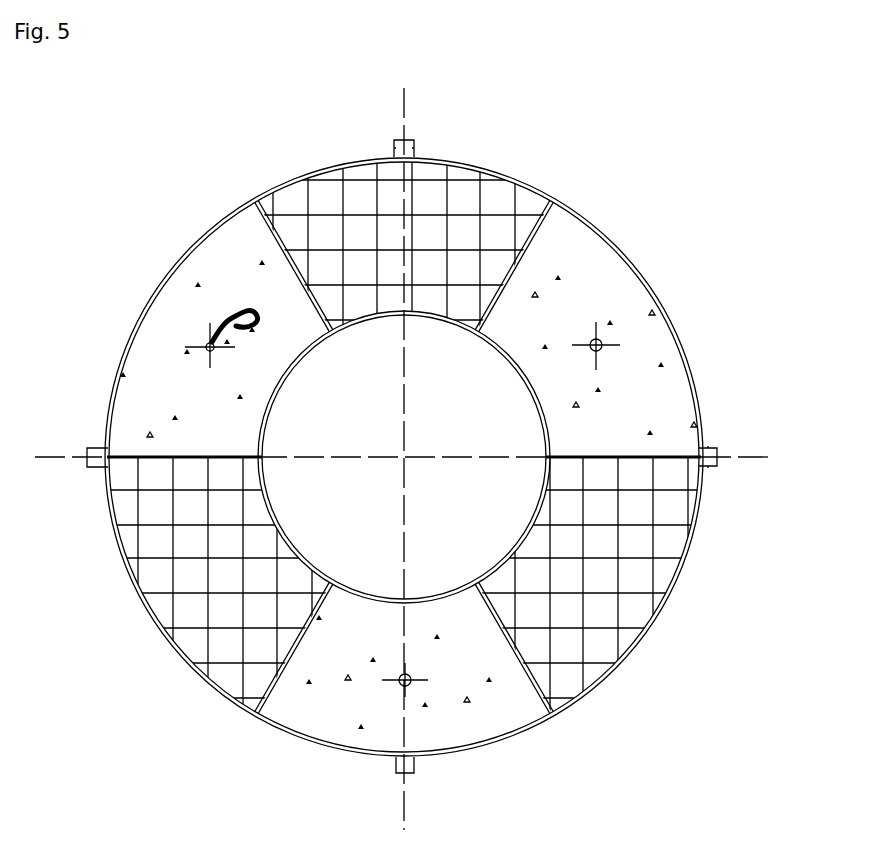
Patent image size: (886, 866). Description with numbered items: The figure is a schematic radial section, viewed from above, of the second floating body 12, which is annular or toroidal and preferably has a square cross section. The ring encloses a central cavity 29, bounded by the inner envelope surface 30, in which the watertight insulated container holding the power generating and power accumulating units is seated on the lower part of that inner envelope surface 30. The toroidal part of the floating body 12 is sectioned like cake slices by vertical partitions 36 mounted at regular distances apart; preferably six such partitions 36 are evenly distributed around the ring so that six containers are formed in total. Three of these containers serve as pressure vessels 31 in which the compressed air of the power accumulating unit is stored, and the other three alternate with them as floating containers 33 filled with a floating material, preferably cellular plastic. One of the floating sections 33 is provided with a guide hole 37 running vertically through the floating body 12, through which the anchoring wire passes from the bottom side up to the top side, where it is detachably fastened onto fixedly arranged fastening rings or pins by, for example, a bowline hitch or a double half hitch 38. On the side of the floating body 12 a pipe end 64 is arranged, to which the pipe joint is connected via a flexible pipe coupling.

The second floating body 12 is at (713, 315).
The central cavity 29 is at (405, 459).
The inner envelope surface 30 is at (535, 523).
The pressure vessels 31 is at (487, 168).
The floating containers 33 is at (632, 262).
The vertical partitions 36 is at (535, 238).
The guide hole 37 is at (208, 345).
The double half hitch 38 is at (223, 320).
The pipe end 64 is at (413, 141).